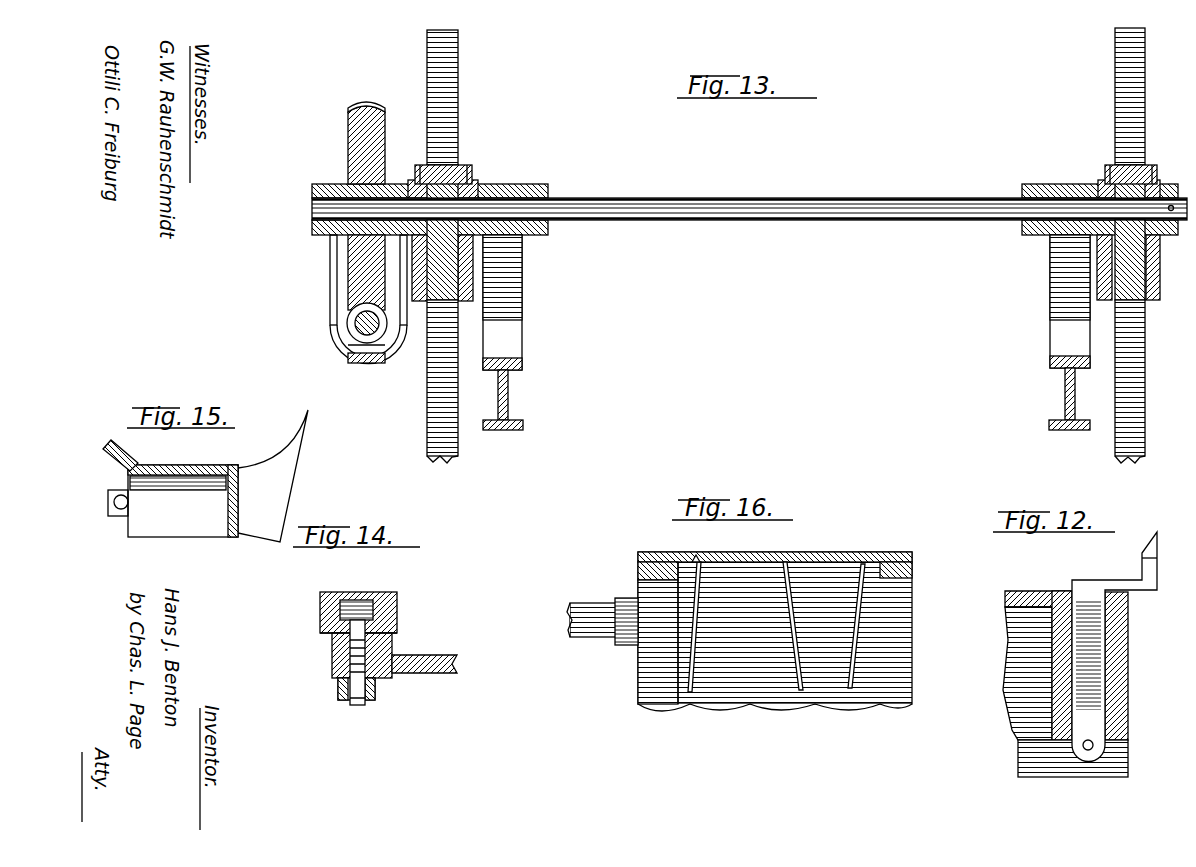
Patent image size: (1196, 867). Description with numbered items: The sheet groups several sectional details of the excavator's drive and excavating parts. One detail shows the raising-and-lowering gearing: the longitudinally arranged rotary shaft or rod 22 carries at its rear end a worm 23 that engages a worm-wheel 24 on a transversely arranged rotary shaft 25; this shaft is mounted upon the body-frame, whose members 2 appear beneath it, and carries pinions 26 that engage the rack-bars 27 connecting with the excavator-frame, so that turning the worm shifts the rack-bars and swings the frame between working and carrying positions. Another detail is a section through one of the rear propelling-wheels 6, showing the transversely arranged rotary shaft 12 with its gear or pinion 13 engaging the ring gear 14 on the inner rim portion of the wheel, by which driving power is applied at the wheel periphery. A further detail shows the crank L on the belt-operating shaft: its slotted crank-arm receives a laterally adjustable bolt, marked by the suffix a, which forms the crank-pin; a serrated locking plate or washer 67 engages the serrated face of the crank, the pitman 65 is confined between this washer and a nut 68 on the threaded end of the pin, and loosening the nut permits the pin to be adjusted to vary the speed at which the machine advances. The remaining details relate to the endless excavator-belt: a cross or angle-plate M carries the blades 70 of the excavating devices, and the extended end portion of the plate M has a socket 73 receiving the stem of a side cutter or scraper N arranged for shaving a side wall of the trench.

In FIG. 13, the rack rail 2 is at (509, 390).
In FIG. 16, the rear propelling-wheel 6 is at (789, 631).
In FIG. 16, the rotary shaft 12 is at (583, 604).
In FIG. 16, the pinion 13 is at (640, 596).
In FIG. 16, the ring gear 14 is at (648, 692).
In FIG. 13, the rotary shaft or rod 22 is at (355, 327).
In FIG. 13, the worm 23 is at (350, 347).
In FIG. 13, the worm-wheel 24 is at (352, 133).
In FIG. 13, the rotary shaft 25 is at (786, 200).
In FIG. 13, the pinion 26 is at (462, 165).
In FIG. 13, the rack-bar 27 is at (469, 61).
In FIG. 14, the pitman 65 is at (352, 703).
In FIG. 14, the locking plate or washer 67 is at (398, 640).
In FIG. 14, the nut 68 is at (457, 661).
In FIG. 15, the blade 70 is at (287, 476).
In FIG. 12, the socket 73 is at (1108, 681).
In FIG. 14, the crank L is at (414, 587).
In FIG. 15, the cross-plate or angle-plate M is at (179, 447).
In FIG. 12, the cross-plate or angle-plate M is at (1014, 574).
In FIG. 12, the scraper-plate or cutter N is at (1117, 558).
In FIG. 14, the bolt (crank-pin) a is at (322, 686).